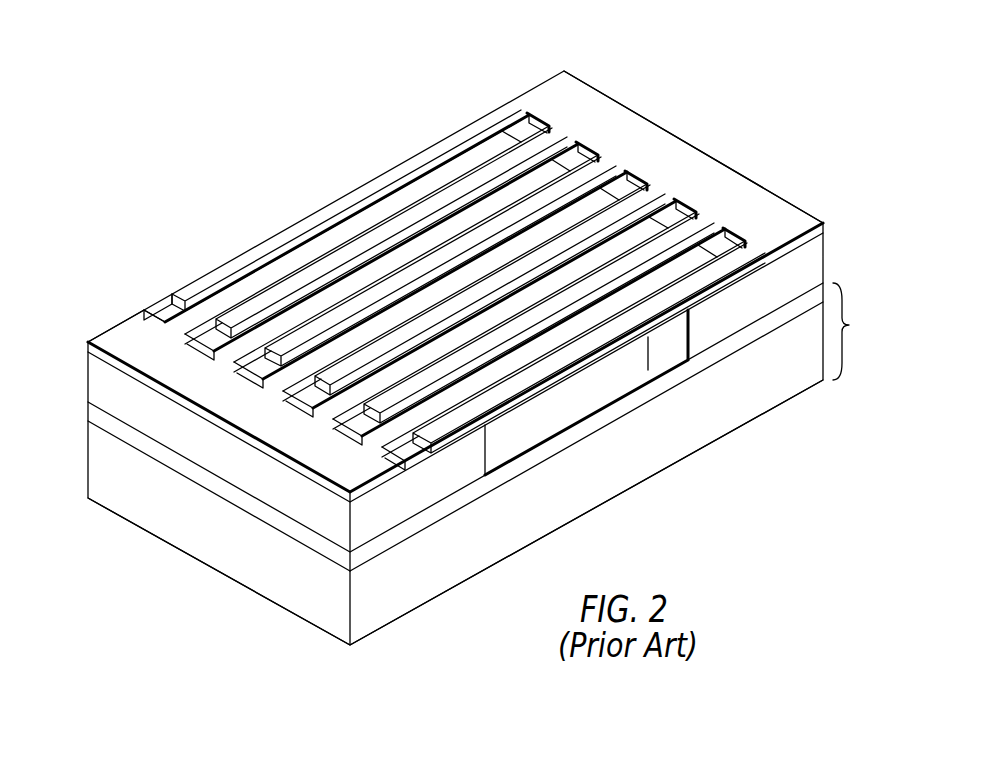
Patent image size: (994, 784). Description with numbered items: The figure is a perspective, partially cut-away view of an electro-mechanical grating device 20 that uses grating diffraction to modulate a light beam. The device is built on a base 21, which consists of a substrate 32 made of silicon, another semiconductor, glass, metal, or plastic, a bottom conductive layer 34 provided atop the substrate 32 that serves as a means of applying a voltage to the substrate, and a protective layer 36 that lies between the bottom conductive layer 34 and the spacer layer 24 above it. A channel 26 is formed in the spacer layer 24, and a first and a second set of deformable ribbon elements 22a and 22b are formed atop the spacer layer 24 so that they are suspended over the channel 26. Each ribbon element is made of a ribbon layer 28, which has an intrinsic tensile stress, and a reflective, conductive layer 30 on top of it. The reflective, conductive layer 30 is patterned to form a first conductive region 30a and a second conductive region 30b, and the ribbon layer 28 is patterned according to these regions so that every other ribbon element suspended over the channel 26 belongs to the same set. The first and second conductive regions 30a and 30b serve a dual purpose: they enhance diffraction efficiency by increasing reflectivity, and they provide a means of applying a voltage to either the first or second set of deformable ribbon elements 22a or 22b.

The electro-mechanical grating device 20 is at (707, 98).
The base 21 is at (856, 331).
The first set of deformable ribbon elements 22a is at (430, 267).
The second set of deformable ribbon elements 22b is at (357, 320).
The spacer layer 24 is at (810, 262).
The channel 26 is at (605, 392).
The ribbon layer 28 is at (107, 360).
The reflective, conductive layer 30 is at (97, 340).
The first conductive region 30a is at (605, 117).
The second conductive region 30b is at (131, 329).
The substrate 32 is at (283, 597).
The bottom conductive layer 34 is at (123, 440).
The protective layer 36 is at (101, 417).